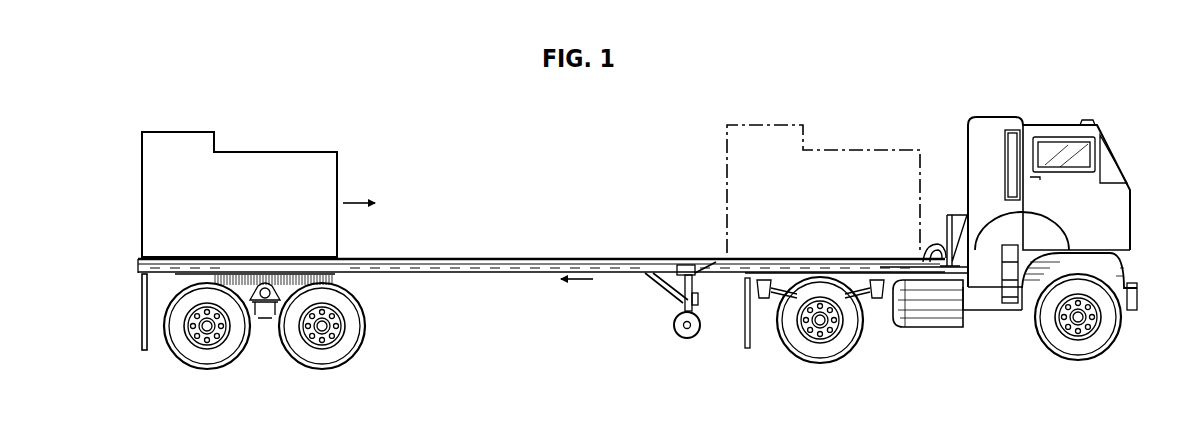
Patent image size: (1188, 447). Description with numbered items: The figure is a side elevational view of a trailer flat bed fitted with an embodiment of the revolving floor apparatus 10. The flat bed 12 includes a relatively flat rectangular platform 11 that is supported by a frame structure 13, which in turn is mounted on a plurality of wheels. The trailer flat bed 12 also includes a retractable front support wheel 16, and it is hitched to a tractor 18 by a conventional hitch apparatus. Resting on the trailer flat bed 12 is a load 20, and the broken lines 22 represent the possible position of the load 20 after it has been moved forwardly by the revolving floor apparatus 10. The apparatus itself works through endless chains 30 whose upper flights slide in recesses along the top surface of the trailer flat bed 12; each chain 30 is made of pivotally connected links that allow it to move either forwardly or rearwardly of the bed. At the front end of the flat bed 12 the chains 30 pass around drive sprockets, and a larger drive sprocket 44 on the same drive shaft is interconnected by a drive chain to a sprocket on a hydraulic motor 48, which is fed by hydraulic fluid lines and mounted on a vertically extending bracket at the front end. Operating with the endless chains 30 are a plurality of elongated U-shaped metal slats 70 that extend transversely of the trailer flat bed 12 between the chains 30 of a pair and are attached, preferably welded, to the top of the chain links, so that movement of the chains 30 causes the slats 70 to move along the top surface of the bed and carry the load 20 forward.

The revolving floor apparatus 10 is at (541, 308).
The platform 11 is at (420, 262).
The flat bed 12 is at (515, 257).
The frame structure 13 is at (182, 274).
The retractable front support wheel 16 is at (679, 332).
The tractor 18 is at (954, 246).
The load 20 is at (205, 131).
The broken lines 22 is at (778, 124).
The endless chain 30 is at (626, 274).
The drive sprocket 44 is at (930, 253).
The hydraulic motor 48 is at (942, 224).
The slats 70 is at (378, 274).